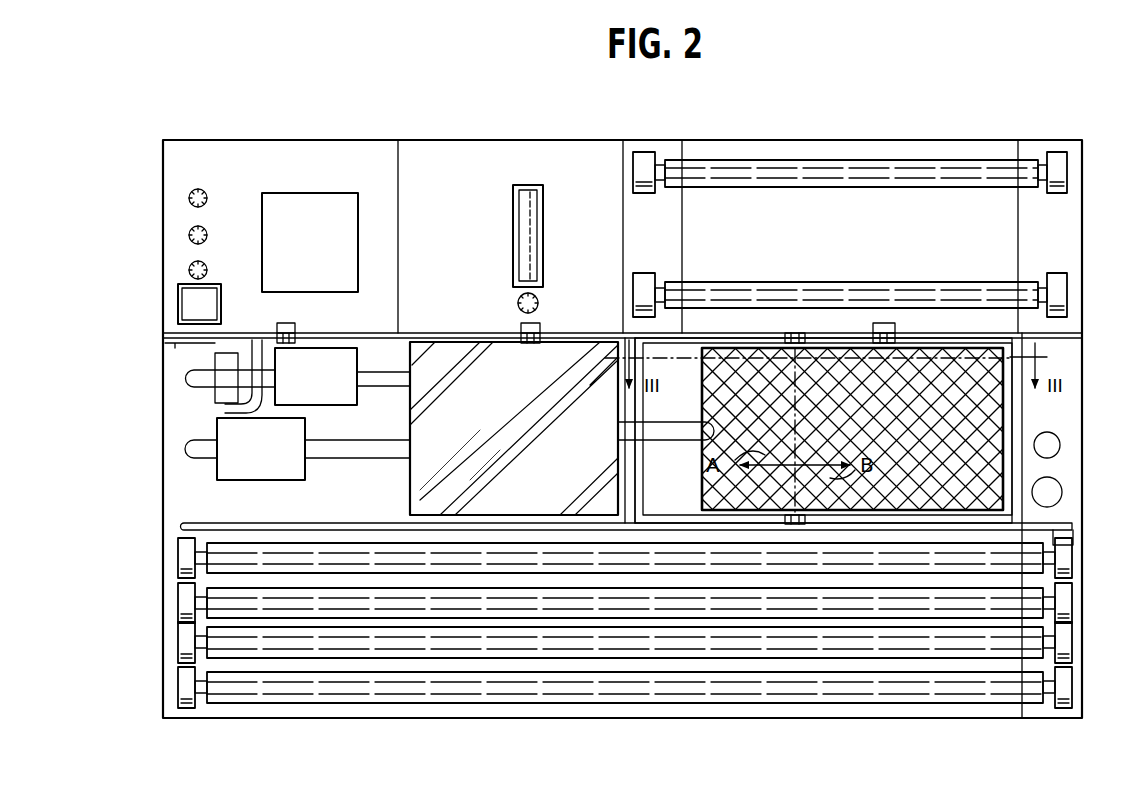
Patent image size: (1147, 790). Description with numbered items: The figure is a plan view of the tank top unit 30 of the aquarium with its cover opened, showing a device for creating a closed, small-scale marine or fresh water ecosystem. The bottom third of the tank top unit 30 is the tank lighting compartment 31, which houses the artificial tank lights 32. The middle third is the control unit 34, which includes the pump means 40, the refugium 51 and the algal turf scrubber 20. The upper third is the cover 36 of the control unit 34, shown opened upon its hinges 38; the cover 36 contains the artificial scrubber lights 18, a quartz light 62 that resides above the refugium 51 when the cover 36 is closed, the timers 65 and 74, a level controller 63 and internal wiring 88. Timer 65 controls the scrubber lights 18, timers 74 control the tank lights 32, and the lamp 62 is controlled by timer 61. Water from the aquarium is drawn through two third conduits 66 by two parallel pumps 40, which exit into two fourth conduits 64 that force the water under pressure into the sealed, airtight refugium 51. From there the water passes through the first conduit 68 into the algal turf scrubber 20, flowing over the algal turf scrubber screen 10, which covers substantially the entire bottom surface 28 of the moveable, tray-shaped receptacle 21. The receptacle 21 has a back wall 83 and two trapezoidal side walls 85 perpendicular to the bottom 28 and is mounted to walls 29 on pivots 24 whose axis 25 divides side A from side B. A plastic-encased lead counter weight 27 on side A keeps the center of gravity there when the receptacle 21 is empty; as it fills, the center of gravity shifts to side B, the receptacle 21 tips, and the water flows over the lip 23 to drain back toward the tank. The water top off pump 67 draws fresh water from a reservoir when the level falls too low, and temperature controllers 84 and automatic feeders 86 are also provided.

The algal turf scrubber screen 10 is at (945, 338).
The artificial scrubber lights 18 is at (995, 295).
The algal turf scrubber 20 is at (1022, 418).
The tray-shaped receptacle 21 is at (1010, 333).
The lip 23 is at (1047, 357).
The pivots 24 is at (783, 337).
The axis 25 is at (809, 372).
The lead counter weight 27 is at (682, 489).
The bottom surface 28 is at (958, 467).
The walls 29 is at (818, 333).
The tank top unit 30 is at (162, 413).
The tank lighting compartment 31 is at (162, 570).
The artificial tank lights 32 is at (300, 600).
The control unit 34 is at (162, 447).
The cover 36 is at (162, 253).
The hinges 38 is at (295, 325).
The pump means 40 is at (330, 390).
The refugium 51 is at (523, 450).
The timer 61 is at (538, 302).
The quartz light 62 is at (530, 242).
The level controller 63 is at (322, 250).
The fourth conduits 64 is at (385, 440).
The timer 65 is at (204, 190).
The third conduits 66 is at (192, 378).
The water top off pump 67 is at (215, 360).
The first conduit 68 is at (668, 438).
The timers 74 is at (207, 268).
The back wall 83 is at (696, 390).
The temperature controllers 84 is at (1047, 445).
The side walls 85 is at (733, 333).
The automatic feeders 86 is at (1047, 492).
The internal wiring 88 is at (214, 315).